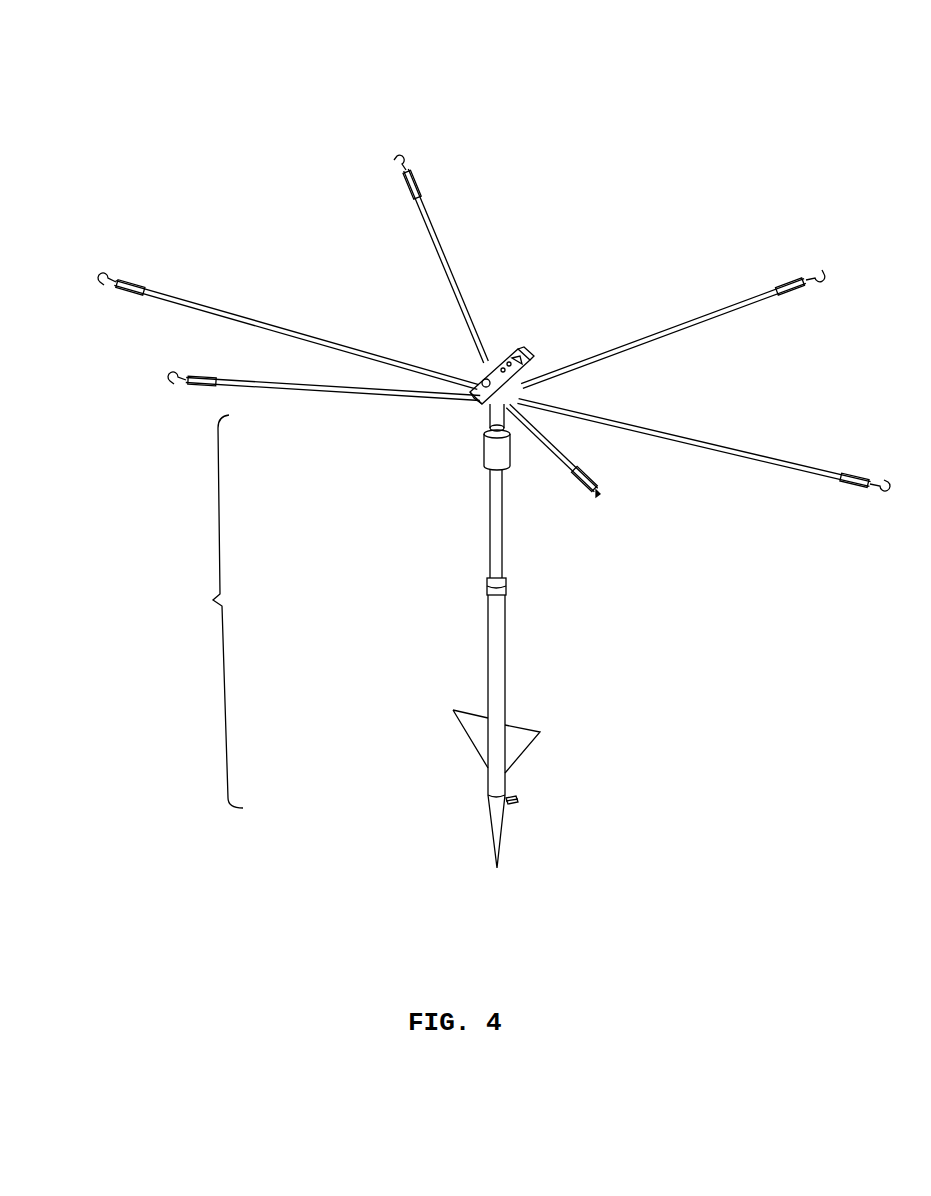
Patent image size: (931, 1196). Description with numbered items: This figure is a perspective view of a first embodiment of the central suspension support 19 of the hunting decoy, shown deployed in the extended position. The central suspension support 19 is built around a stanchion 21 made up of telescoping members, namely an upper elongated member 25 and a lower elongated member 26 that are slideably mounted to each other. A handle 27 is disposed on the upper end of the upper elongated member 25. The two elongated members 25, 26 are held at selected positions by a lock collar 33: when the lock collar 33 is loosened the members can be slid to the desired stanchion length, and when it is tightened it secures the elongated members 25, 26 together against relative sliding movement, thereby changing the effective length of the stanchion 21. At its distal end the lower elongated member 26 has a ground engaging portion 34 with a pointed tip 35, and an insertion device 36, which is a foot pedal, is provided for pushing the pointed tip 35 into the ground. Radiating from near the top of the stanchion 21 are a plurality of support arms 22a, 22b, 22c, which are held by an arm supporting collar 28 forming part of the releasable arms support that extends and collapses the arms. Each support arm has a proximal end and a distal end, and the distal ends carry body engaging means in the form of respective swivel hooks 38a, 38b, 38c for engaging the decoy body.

The central suspension support 19 is at (675, 134).
The stanchion 21 is at (209, 611).
The support arm 22a is at (382, 358).
The support arm 22b is at (440, 245).
The support arm 22c is at (307, 396).
The upper elongated member 25 is at (490, 550).
The lower elongated member 26 is at (495, 648).
The handle 27 is at (515, 356).
The arm supporting collar 28 is at (478, 420).
The lock collar 33 is at (506, 590).
The ground engaging portion 34 is at (518, 801).
The pointed tip 35 is at (495, 866).
The insertion device 36 is at (515, 738).
The swivel hook 38a is at (100, 279).
The swivel hook 38b is at (396, 158).
The swivel hook 38c is at (170, 381).